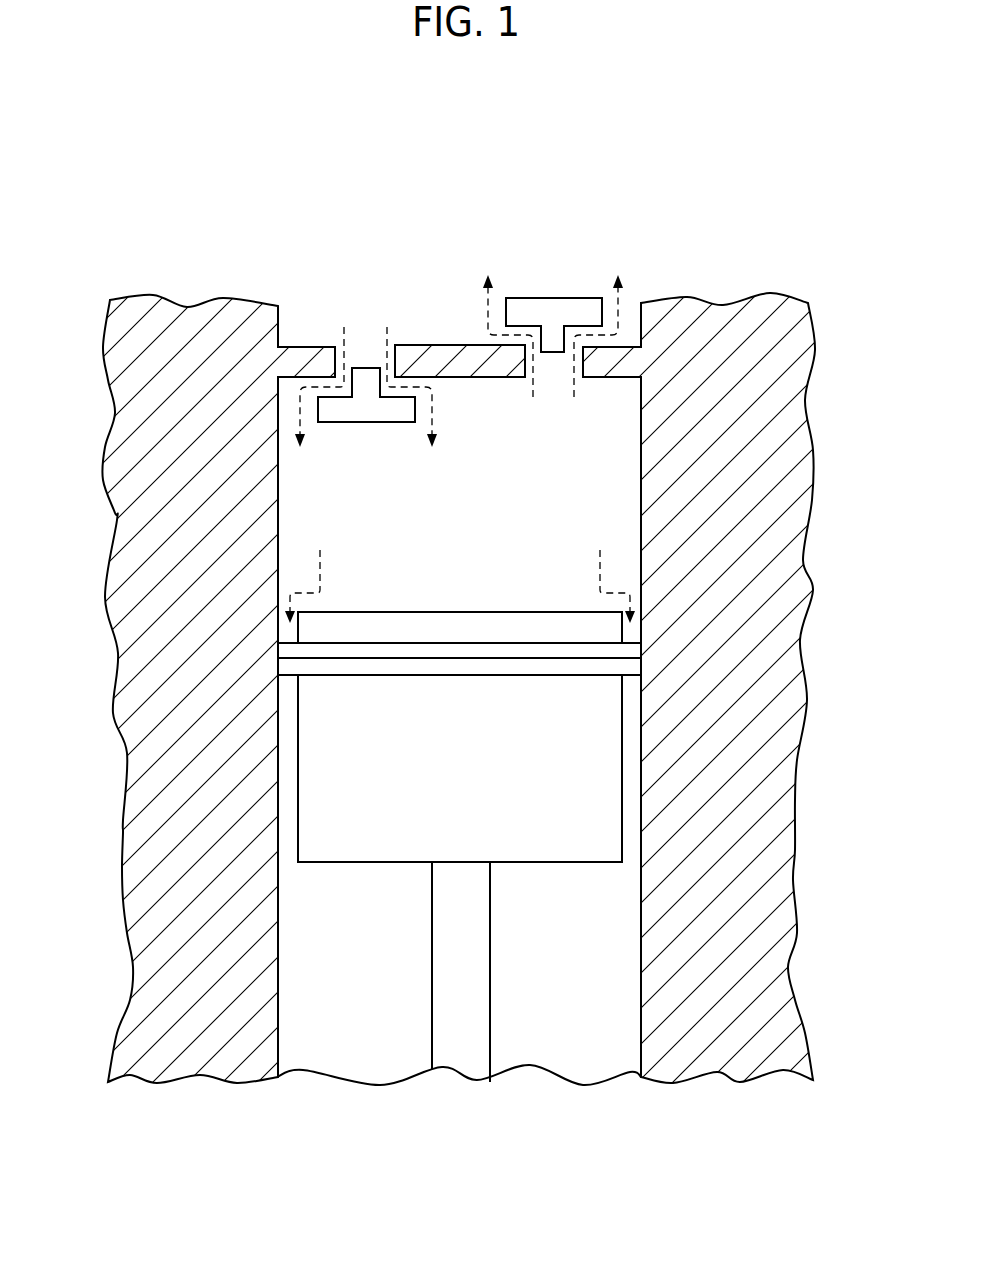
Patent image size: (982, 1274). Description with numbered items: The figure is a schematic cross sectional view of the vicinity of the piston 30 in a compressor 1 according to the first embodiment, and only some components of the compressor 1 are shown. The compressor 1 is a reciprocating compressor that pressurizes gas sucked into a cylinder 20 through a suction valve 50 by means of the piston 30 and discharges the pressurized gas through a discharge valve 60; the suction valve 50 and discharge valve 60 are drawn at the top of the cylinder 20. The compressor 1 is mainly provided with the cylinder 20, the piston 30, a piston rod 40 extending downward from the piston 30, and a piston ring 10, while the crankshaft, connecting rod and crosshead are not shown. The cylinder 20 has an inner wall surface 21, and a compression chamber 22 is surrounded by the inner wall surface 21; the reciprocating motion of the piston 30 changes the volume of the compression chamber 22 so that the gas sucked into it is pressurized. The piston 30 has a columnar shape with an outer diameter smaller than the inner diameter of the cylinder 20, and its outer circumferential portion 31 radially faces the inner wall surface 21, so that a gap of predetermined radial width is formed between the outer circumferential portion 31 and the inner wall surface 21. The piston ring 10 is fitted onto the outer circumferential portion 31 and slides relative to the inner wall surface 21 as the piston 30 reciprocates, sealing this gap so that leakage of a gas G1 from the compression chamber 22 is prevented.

The compressor 1 is at (822, 240).
The piston ring 10 is at (672, 652).
The cylinder 20 is at (137, 722).
The inner wall surface 21 is at (287, 550).
The compression chamber 22 is at (486, 486).
The piston 30 is at (553, 712).
The outer circumferential portion 31 is at (298, 724).
The piston rod 40 is at (454, 1022).
The suction valve 50 is at (364, 318).
The discharge valve 60 is at (563, 275).
The gas G1 is at (320, 573).